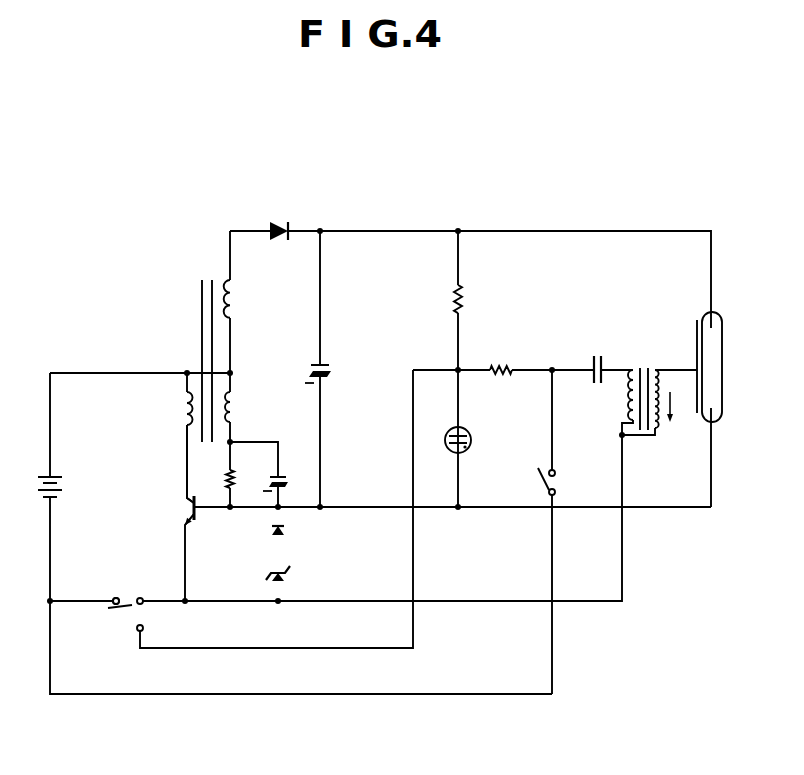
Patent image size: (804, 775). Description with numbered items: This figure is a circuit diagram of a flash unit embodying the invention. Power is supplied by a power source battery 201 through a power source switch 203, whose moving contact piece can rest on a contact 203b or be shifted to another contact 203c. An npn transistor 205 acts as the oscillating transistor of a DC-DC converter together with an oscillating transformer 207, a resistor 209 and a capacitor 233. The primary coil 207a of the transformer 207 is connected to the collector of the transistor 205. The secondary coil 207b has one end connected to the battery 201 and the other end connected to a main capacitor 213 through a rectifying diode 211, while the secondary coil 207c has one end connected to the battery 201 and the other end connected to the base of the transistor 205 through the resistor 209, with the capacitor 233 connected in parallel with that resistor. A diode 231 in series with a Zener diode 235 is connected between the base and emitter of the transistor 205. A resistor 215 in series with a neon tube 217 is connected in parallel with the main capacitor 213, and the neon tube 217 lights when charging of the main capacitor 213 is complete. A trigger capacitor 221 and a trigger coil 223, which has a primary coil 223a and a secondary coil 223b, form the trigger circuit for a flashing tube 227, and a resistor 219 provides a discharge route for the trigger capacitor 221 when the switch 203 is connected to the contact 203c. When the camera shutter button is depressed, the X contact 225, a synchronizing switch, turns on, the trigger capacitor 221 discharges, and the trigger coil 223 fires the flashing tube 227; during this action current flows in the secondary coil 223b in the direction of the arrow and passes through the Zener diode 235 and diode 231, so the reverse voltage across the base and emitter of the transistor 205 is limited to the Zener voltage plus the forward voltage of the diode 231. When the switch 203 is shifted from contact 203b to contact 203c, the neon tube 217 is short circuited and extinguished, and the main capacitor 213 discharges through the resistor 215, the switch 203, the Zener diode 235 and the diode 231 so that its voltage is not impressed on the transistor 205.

The power source battery 201 is at (60, 477).
The power source switch 203 is at (130, 612).
The contact 203b is at (116, 597).
The contact 203c is at (145, 628).
The npn transistor 205 is at (180, 507).
The oscillating transformer 207 is at (205, 342).
The primary coil 207a is at (183, 410).
The secondary coil 207b is at (232, 308).
The secondary coil 207c is at (233, 407).
The resistor 209 is at (232, 460).
The rectifying diode 211 is at (290, 207).
The main capacitor 213 is at (329, 368).
The resistor 215 is at (465, 300).
The neon tube 217 is at (471, 431).
The resistor 219 is at (505, 363).
The trigger capacitor 221 is at (598, 352).
The trigger coil 223 is at (619, 404).
The primary coil of trigger coil 223a is at (627, 395).
The secondary coil of trigger coil 223b is at (658, 428).
The X contact 225 is at (538, 468).
The flashing tube 227 is at (719, 323).
The diode 231 is at (284, 531).
The capacitor 233 is at (295, 466).
The Zener diode 235 is at (290, 568).